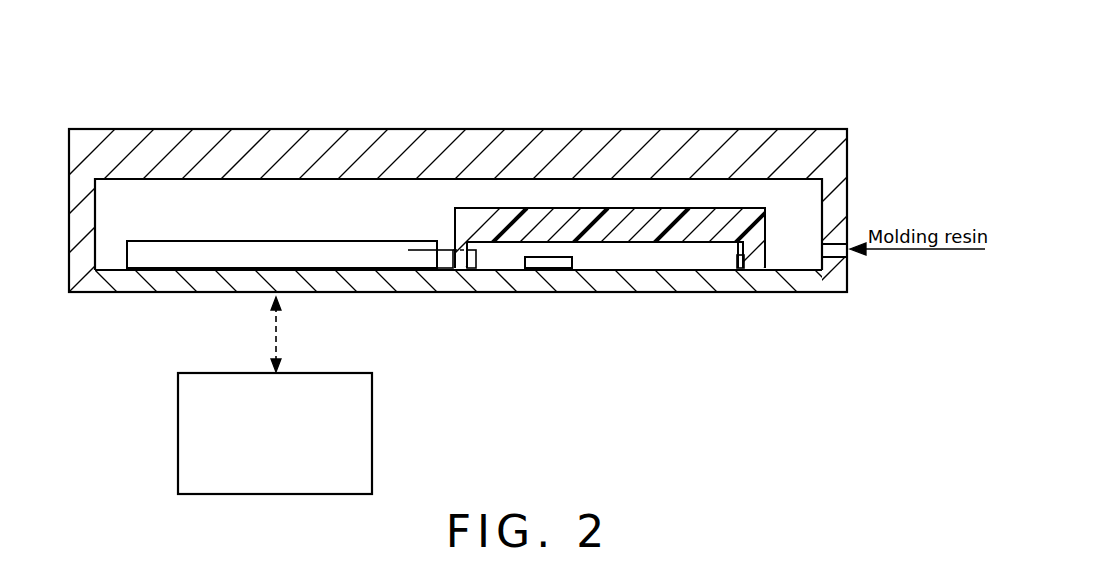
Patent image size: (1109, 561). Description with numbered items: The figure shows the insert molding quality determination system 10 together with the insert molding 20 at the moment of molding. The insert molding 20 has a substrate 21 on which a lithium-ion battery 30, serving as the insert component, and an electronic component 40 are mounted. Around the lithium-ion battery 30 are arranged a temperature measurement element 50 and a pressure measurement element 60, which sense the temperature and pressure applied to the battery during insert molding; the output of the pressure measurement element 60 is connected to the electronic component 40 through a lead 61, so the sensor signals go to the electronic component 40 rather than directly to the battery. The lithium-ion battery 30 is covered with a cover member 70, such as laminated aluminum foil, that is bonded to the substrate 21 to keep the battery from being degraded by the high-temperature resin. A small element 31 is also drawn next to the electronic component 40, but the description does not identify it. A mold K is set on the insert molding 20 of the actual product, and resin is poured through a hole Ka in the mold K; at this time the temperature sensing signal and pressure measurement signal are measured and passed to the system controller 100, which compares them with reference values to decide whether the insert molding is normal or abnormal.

The insert molding quality determination system 10 is at (763, 293).
The insert molding 20 is at (671, 293).
The substrate 21 is at (537, 283).
The lithium-ion battery 30 is at (650, 255).
The wiring 31 is at (449, 263).
The electronic component 40 is at (321, 257).
The temperature measurement element 50 is at (740, 263).
The pressure measurement element 60 is at (548, 257).
The lead 61 is at (445, 252).
The cover member 70 is at (612, 222).
The system controller 100 is at (372, 433).
The mold K is at (787, 129).
The hole Ka is at (833, 252).